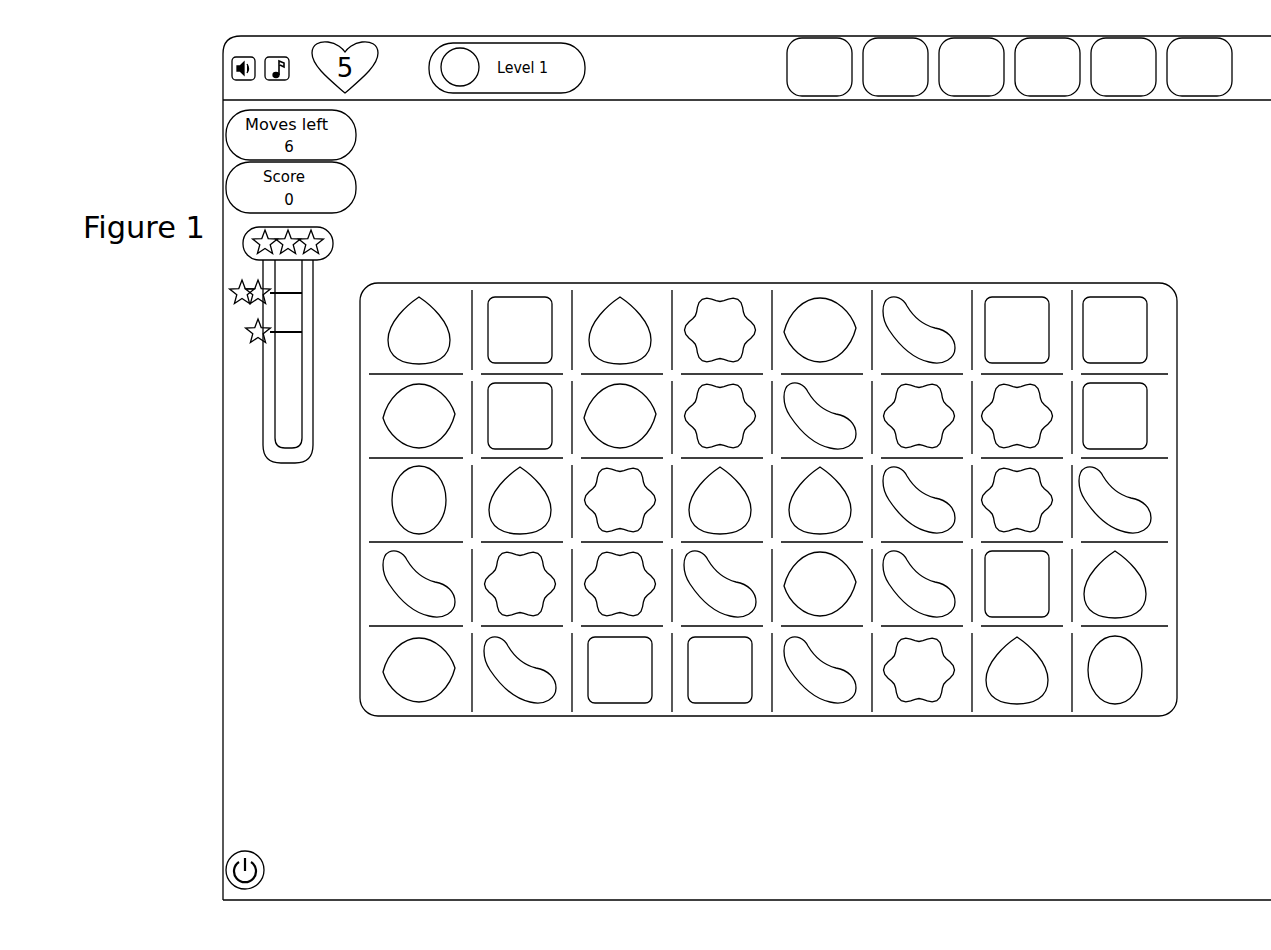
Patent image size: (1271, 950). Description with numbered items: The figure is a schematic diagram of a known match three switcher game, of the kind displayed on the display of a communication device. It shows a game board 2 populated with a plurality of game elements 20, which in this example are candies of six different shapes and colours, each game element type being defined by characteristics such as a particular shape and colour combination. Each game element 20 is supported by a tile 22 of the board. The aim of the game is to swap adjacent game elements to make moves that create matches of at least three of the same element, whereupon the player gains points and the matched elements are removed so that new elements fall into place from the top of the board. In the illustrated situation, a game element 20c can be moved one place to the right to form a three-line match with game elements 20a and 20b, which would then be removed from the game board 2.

The game board 2 is at (1032, 713).
The game element 20 is at (1132, 339).
The game element 20a is at (939, 523).
The game element 20b is at (950, 590).
The game element 20c is at (829, 684).
The tile 22 is at (1167, 319).